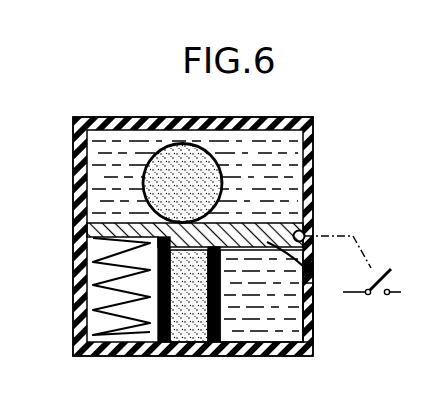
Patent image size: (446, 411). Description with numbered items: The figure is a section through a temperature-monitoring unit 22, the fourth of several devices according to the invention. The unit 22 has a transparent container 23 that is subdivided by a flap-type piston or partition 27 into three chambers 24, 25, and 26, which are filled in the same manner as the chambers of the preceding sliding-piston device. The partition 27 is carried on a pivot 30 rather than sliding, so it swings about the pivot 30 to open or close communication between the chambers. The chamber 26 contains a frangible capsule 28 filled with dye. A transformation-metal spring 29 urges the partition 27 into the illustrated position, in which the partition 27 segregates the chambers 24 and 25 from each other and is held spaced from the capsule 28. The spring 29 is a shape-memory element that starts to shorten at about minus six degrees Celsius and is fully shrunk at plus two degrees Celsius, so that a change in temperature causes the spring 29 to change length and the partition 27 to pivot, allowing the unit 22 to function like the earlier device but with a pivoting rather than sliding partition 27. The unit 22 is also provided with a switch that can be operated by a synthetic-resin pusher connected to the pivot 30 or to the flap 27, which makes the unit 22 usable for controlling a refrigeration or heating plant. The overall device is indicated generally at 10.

The tilt switch device 10 is at (4, 3).
The temperature-monitoring unit 22 is at (68, 222).
The transparent container 23 is at (312, 294).
The chamber 24 is at (262, 318).
The chamber 25 is at (187, 320).
The chamber 26 is at (283, 188).
The flap-type piston or partition 27 is at (313, 272).
The frangible capsule 28 is at (184, 160).
The transformation-metal spring 29 is at (118, 315).
The pivot 30 is at (305, 236).